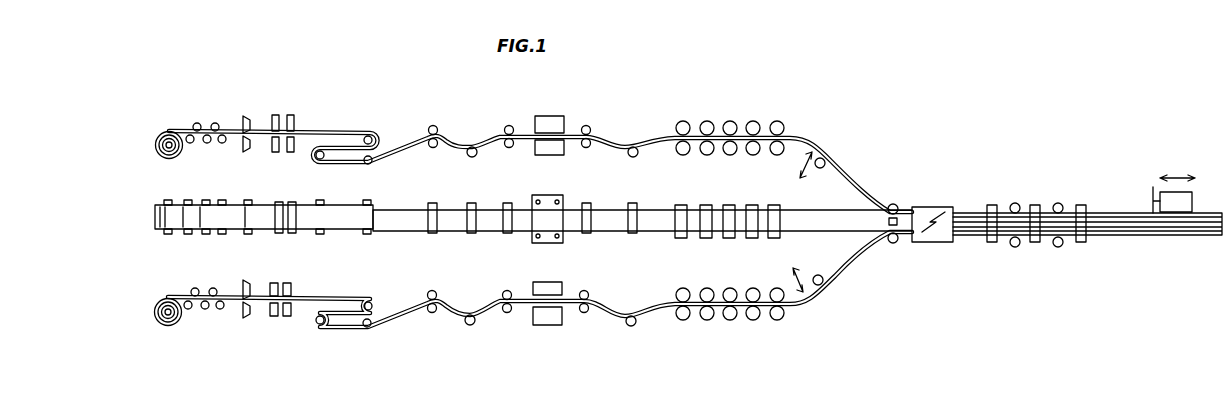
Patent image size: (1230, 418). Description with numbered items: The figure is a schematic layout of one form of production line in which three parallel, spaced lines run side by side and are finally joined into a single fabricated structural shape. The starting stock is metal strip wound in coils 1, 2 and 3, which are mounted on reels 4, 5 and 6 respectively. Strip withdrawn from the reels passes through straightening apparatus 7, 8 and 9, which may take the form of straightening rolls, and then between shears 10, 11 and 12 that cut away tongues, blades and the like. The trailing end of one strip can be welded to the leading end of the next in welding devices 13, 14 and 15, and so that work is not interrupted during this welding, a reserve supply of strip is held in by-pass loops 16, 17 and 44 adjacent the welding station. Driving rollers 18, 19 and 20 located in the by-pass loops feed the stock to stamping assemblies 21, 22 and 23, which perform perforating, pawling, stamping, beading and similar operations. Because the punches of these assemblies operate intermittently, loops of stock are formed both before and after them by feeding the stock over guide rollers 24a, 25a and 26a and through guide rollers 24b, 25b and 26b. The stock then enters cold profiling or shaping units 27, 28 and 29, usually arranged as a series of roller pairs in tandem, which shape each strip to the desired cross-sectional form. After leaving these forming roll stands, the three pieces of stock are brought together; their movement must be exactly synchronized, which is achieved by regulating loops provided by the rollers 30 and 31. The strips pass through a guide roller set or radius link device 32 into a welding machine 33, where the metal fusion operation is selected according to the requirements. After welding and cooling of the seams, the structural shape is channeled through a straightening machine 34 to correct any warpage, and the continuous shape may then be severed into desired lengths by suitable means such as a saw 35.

The coil 1 is at (156, 151).
The coil 2 is at (160, 217).
The coil 3 is at (155, 306).
The reel 4 is at (169, 141).
The reel 5 is at (167, 235).
The reel 6 is at (168, 316).
The straightening apparatus 7 is at (207, 143).
The straightening apparatus 8 is at (206, 235).
The straightening apparatus 9 is at (205, 309).
The shears 10 is at (245, 124).
The shears 11 is at (249, 235).
The shears 12 is at (246, 314).
The welding device 13 is at (275, 150).
The welding device 14 is at (282, 202).
The welding device 15 is at (274, 314).
The by-pass loop 16 is at (370, 165).
The by-pass loop 17 is at (372, 320).
The driving rollers 18 is at (433, 148).
The driving rollers 19 is at (432, 234).
The driving rollers 20 is at (432, 313).
The stamping assembly 21 is at (550, 152).
The stamping assembly 22 is at (547, 230).
The stamping assembly 23 is at (548, 318).
The guide roller 24a is at (470, 147).
The guide roller 24b is at (633, 147).
The guide roller 25a is at (471, 203).
The guide roller 25b is at (633, 236).
The guide roller 26a is at (470, 315).
The guide roller 26b is at (631, 316).
The cold profiling unit 27 is at (730, 124).
The cold profiling unit 28 is at (730, 240).
The cold profiling unit 29 is at (730, 320).
The roller 30 is at (825, 160).
The roller 31 is at (819, 275).
The guide roller set 32 is at (895, 243).
The welding machine 33 is at (933, 210).
The straightening machine 34 is at (1034, 208).
The saw 35 is at (1178, 210).
The by-pass loop 44 is at (367, 235).